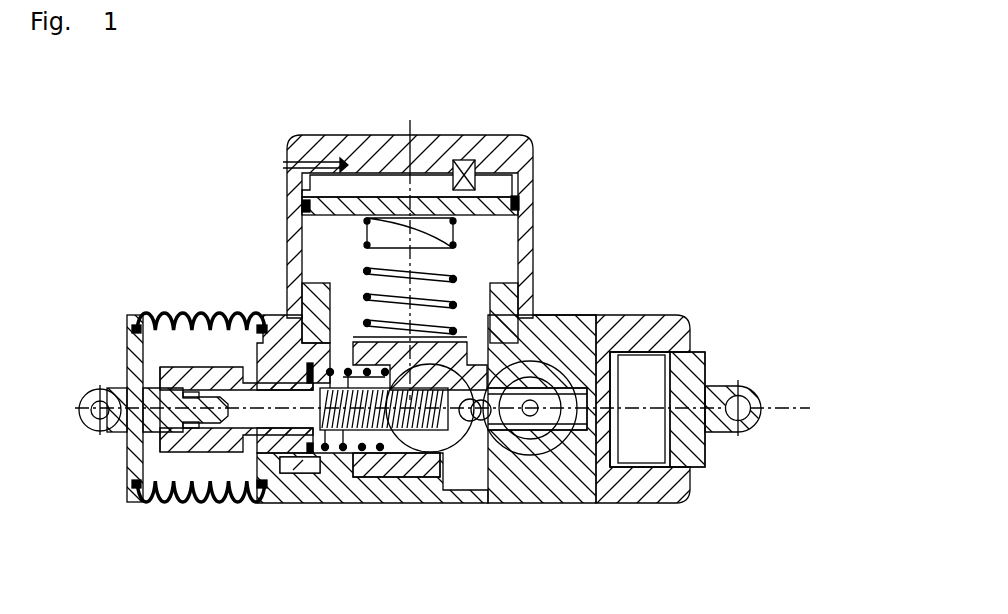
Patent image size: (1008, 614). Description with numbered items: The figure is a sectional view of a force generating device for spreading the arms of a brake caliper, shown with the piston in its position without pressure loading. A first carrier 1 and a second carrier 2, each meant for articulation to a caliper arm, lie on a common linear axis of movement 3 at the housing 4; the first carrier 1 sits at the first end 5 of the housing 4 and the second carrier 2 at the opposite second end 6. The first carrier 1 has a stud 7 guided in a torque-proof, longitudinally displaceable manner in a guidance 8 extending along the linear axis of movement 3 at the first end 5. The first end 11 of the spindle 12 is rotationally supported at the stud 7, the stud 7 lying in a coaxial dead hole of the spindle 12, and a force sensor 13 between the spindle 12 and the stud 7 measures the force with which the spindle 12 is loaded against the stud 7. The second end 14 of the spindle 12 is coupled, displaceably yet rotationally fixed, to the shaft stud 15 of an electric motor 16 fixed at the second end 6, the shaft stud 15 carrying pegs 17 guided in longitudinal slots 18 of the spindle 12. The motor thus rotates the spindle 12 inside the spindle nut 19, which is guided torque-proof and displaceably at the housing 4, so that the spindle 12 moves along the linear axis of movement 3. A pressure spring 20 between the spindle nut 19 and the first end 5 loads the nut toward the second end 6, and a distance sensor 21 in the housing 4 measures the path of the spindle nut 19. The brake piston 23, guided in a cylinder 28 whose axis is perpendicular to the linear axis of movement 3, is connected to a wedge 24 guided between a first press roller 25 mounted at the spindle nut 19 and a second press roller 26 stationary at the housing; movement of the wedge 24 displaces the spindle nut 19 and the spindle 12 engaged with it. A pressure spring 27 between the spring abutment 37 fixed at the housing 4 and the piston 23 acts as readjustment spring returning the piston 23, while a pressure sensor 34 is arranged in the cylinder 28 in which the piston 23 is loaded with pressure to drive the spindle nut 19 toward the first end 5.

The first carrier 1 is at (126, 330).
The second carrier 2 is at (733, 390).
The linear axis of movement 3 is at (793, 408).
The housing 4 is at (295, 237).
The first end 5 is at (248, 300).
The second end 6 is at (717, 340).
The stud 7 is at (160, 330).
The guidance 8 is at (209, 392).
The first end 11 is at (215, 425).
The spindle 12 is at (356, 430).
The force sensor 13 is at (196, 430).
The second end 14 is at (606, 450).
The shaft stud 15 is at (603, 417).
The electric motor 16 is at (641, 409).
The pegs 17 is at (478, 440).
The longitudinal slots 18 is at (560, 430).
The spindle nut 19 is at (405, 465).
The pressure spring 20 is at (325, 452).
The distance sensor 21 is at (290, 470).
The piston 23 is at (393, 205).
The wedge 24 is at (525, 195).
The first press roller 25 is at (437, 470).
The second press roller 26 is at (565, 373).
The pressure spring 27 is at (410, 125).
The cylinder 28 is at (492, 187).
The pressure sensor 34 is at (469, 160).
The spring abutment 37 is at (355, 355).